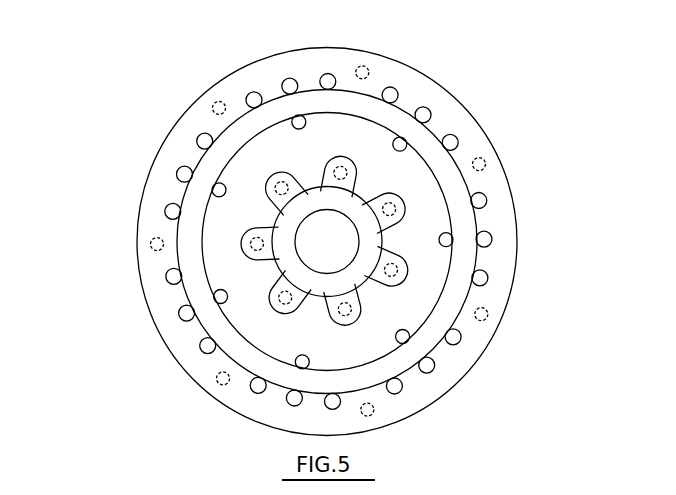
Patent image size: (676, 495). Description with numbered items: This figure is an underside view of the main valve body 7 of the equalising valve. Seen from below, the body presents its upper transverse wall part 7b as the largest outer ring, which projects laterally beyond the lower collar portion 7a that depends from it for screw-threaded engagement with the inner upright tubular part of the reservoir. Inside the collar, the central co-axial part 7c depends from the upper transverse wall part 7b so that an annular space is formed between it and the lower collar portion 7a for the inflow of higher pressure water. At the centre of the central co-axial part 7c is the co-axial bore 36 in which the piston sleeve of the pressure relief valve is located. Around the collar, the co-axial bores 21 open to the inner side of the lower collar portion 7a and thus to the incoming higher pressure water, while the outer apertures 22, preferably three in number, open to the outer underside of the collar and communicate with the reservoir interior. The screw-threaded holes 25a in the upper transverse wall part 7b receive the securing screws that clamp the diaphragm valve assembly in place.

The main valve body 7 is at (454, 86).
The lower collar portion 7a is at (197, 293).
The upper transverse wall part 7b is at (212, 255).
The central co-axial part 7c is at (288, 217).
The co-axial bore 21 is at (449, 250).
The outer apertures 22 is at (485, 279).
The holes 25a is at (397, 207).
The co-axial bore 36 is at (327, 242).